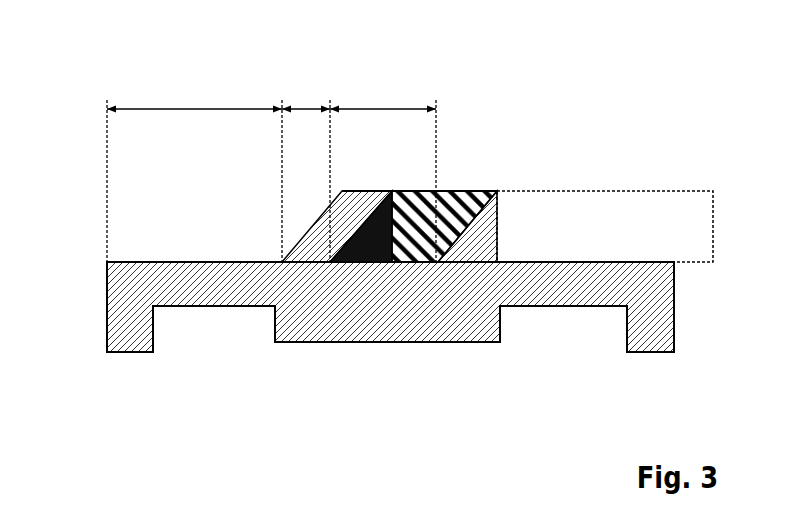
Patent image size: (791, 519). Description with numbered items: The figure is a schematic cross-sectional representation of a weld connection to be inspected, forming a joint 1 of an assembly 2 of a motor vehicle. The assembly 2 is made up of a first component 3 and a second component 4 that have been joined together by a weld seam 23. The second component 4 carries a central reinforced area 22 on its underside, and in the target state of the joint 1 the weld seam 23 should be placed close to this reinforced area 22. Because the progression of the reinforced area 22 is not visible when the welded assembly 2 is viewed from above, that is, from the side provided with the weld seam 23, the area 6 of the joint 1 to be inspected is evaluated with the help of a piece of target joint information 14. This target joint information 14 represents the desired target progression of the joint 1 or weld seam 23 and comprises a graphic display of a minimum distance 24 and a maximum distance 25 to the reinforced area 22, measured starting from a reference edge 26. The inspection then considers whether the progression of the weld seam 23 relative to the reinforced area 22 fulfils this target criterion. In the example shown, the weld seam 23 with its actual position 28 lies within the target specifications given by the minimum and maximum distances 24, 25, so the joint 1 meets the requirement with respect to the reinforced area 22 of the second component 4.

The joint 1 is at (395, 220).
The assembly 2 is at (712, 280).
The first component 3 is at (472, 217).
The second component 4 is at (650, 352).
The area of the joint to be inspected 6 is at (315, 207).
The target joint information 14 is at (290, 80).
The reinforced area 22 is at (388, 353).
The weld seam 23 is at (365, 215).
The minimum distance 24 is at (196, 109).
The maximum distance 25 is at (385, 109).
The reference edge 26 is at (107, 274).
The actual position 28 is at (307, 109).